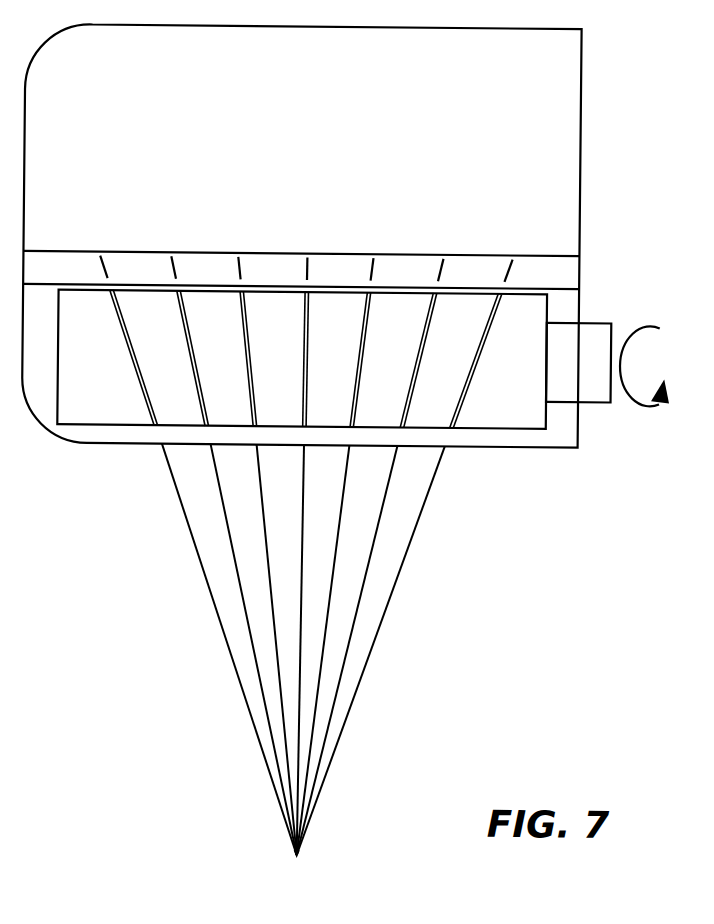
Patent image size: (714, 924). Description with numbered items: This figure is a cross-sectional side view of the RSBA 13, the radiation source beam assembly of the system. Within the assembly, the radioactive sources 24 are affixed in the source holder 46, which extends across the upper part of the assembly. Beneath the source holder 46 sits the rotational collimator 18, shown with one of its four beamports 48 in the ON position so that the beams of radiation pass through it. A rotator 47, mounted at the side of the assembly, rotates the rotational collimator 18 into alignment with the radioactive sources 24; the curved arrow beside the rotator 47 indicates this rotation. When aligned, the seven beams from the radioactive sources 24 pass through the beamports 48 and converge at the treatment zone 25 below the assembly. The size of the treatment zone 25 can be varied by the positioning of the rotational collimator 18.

The RSBA 13 is at (579, 40).
The source holder 46 is at (124, 253).
The radioactive sources 24 is at (305, 268).
The rotational collimator 18 is at (528, 428).
The beamports 48 is at (146, 399).
The rotator 47 is at (601, 401).
The treatment zone 25 is at (303, 855).